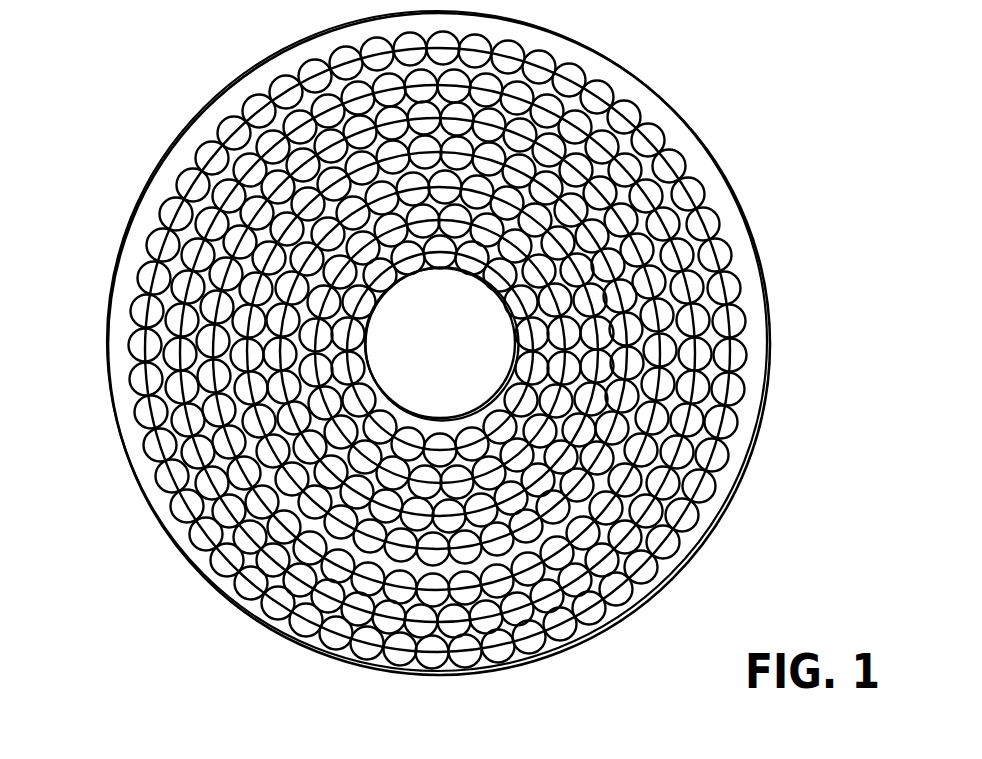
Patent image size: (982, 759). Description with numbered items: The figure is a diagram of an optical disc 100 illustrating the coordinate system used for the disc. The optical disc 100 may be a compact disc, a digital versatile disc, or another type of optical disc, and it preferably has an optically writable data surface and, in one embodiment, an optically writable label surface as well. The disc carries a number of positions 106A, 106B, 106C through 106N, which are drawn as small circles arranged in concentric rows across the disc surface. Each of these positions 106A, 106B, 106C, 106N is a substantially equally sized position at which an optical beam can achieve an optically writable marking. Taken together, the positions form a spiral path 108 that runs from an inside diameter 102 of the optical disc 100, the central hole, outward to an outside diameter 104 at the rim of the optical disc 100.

The optical disc 100 is at (118, 600).
The inside diameter 102 is at (384, 356).
The outside diameter 104 is at (113, 431).
The position 106A is at (520, 327).
The position 106B is at (512, 302).
The position 106C is at (462, 264).
The position 106N is at (596, 624).
The spiral path 108 is at (720, 417).